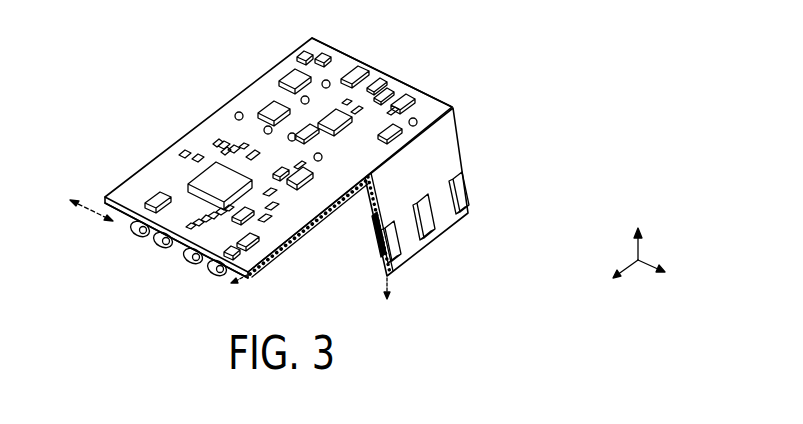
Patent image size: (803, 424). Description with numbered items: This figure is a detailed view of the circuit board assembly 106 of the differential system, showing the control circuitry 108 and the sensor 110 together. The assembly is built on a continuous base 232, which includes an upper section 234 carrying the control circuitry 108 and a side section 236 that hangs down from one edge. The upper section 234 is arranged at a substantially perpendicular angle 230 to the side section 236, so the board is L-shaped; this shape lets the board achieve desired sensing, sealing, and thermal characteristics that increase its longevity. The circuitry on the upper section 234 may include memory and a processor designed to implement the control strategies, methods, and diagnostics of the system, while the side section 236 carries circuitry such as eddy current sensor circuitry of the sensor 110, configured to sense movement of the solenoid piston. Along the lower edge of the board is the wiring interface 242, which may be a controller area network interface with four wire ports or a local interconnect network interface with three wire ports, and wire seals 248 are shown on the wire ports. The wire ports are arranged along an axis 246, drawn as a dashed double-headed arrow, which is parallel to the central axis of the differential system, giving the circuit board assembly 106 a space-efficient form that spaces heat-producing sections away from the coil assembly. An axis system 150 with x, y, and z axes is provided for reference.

The circuit board assembly 106 is at (532, 66).
The control circuitry 108 is at (315, 23).
The sensor 110 is at (464, 102).
The axis system 150 is at (667, 244).
The substantially perpendicular angle 230 is at (345, 198).
The continuous base 232 is at (430, 99).
The upper section 234 is at (372, 78).
The side section 236 is at (450, 216).
The wiring interface 242 is at (181, 282).
The axis 246 is at (84, 220).
The wire seals 248 is at (162, 240).